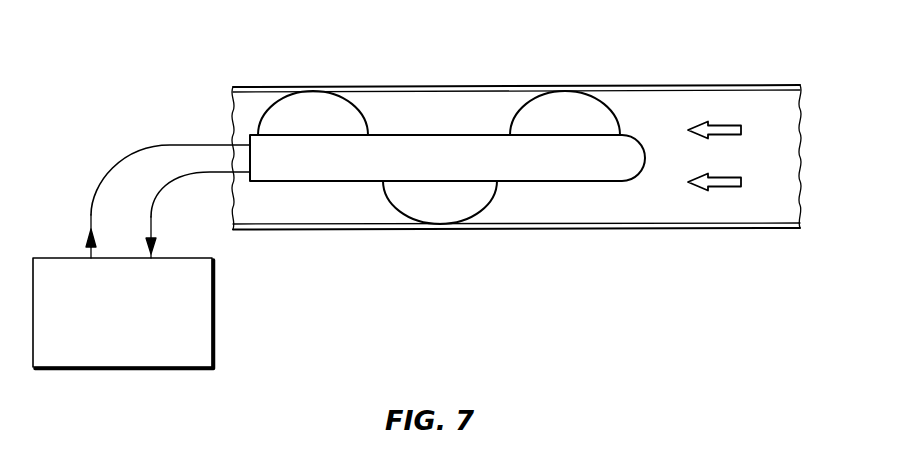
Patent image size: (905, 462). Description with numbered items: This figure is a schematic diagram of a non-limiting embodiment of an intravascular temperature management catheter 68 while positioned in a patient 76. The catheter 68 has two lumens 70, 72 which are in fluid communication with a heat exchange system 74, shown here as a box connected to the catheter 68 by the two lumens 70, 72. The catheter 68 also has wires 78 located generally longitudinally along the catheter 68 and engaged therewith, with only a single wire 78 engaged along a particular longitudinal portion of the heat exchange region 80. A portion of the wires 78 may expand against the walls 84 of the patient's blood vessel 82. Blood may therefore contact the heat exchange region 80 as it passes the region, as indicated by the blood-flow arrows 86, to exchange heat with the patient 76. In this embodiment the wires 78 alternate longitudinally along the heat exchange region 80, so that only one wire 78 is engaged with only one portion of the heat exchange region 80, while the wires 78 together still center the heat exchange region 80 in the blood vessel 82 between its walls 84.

The catheter 68 is at (428, 161).
The lumen 70 is at (113, 178).
The lumen 72 is at (160, 200).
The heat exchange system 74 is at (123, 369).
The patient 76 is at (668, 85).
The wires 78 is at (268, 112).
The heat exchange region 80 is at (442, 135).
The blood vessel 82 is at (642, 203).
The walls 84 is at (373, 91).
The blood-flow arrows 86 is at (723, 126).